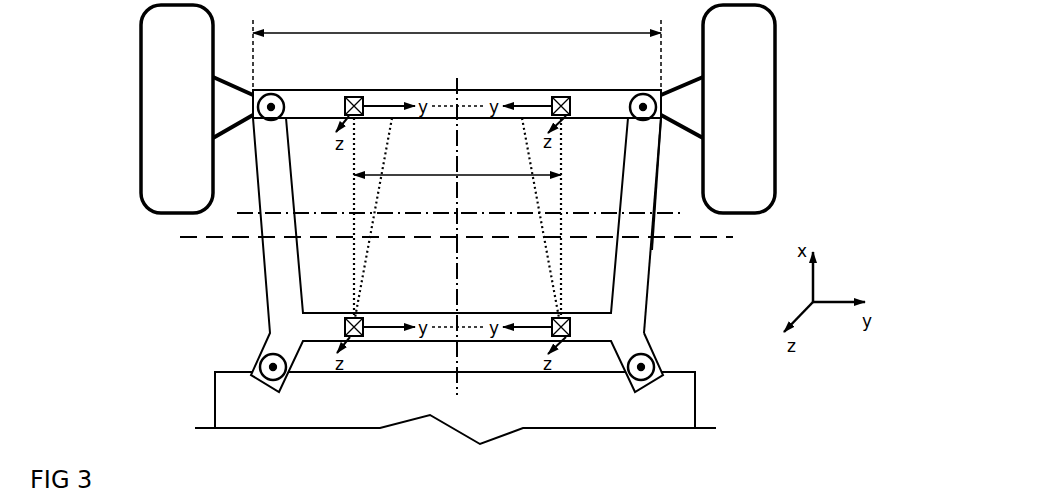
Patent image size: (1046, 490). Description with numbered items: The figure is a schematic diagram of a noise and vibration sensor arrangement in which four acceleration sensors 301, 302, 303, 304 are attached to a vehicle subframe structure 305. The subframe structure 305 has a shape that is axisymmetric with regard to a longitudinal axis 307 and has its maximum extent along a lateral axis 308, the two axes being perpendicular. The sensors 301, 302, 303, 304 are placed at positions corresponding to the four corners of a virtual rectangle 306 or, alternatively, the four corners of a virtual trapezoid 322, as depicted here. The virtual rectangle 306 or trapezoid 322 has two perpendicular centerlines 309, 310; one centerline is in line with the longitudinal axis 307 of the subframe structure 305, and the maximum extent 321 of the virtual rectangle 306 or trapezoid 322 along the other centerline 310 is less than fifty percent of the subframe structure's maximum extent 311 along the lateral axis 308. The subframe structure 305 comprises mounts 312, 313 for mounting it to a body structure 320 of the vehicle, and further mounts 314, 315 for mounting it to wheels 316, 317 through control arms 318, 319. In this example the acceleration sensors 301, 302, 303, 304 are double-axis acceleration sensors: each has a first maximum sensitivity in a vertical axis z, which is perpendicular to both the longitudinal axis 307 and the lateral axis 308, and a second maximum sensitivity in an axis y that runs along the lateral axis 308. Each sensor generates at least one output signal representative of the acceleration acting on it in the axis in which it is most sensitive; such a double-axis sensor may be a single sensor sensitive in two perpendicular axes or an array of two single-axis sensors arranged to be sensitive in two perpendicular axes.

The acceleration sensor 301 is at (353, 97).
The acceleration sensor 302 is at (356, 318).
The acceleration sensor 303 is at (562, 97).
The acceleration sensor 304 is at (562, 315).
The vehicle subframe structure 305 is at (650, 248).
The virtual rectangle 306 is at (562, 263).
The longitudinal axis 307 is at (455, 78).
The lateral axis 308 is at (180, 237).
The centerline 309 is at (456, 395).
The centerline 310 is at (588, 212).
The maximum extent of subframe structure 311 is at (458, 33).
The mount 312 is at (257, 362).
The mount 313 is at (658, 362).
The mount 314 is at (273, 94).
The mount 315 is at (643, 97).
The wheel 316 is at (141, 102).
The wheel 317 is at (777, 97).
The control arm 318 is at (232, 128).
The control arm 319 is at (680, 126).
The body structure 320 is at (686, 407).
The maximum extent of virtual rectangle or trapezoid 321 is at (395, 173).
The virtual trapezoid 322 is at (535, 193).